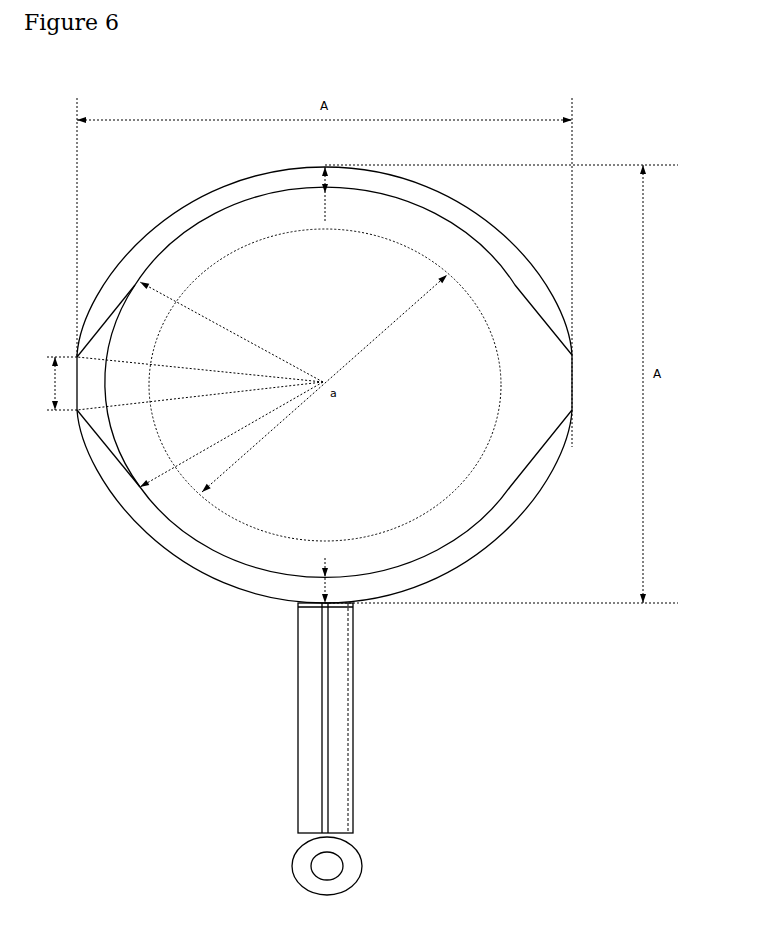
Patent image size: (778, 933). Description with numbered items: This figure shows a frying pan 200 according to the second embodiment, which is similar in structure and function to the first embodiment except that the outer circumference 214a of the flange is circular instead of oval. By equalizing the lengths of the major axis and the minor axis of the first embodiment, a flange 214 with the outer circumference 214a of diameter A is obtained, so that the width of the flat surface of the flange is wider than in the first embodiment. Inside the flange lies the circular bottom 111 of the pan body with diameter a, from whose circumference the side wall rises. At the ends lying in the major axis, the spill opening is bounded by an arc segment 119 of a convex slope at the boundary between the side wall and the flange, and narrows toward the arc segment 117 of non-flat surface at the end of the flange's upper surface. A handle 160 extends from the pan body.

The frying pan 200 is at (342, 75).
The flange 214 is at (147, 548).
The outer circumference of the flange 214a is at (190, 568).
The handle 160 is at (300, 710).
The bottom 111 is at (337, 385).
The arc segment 117 is at (173, 383).
The arc segment 119 is at (215, 384).